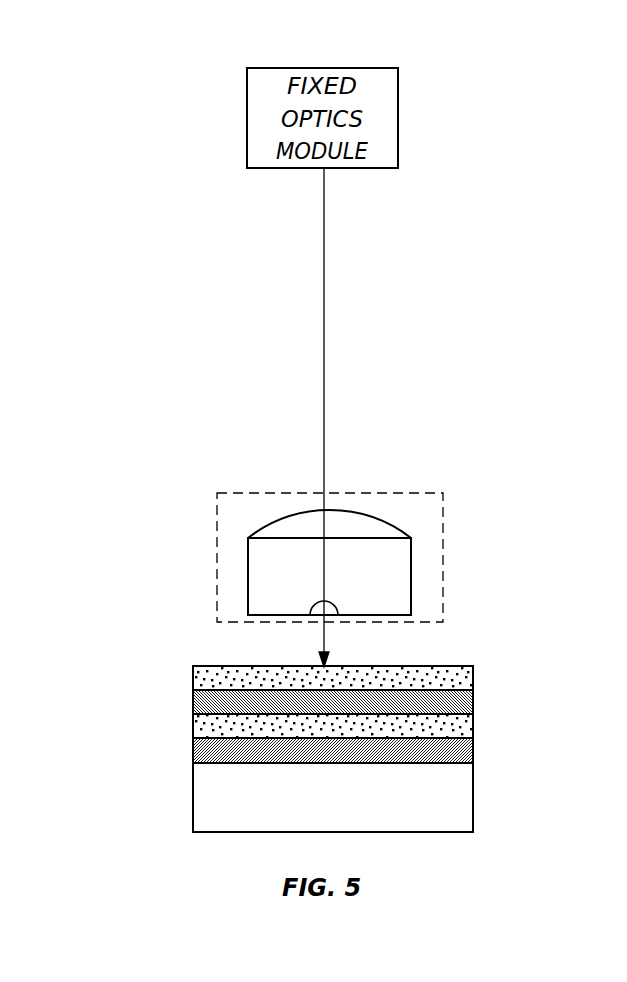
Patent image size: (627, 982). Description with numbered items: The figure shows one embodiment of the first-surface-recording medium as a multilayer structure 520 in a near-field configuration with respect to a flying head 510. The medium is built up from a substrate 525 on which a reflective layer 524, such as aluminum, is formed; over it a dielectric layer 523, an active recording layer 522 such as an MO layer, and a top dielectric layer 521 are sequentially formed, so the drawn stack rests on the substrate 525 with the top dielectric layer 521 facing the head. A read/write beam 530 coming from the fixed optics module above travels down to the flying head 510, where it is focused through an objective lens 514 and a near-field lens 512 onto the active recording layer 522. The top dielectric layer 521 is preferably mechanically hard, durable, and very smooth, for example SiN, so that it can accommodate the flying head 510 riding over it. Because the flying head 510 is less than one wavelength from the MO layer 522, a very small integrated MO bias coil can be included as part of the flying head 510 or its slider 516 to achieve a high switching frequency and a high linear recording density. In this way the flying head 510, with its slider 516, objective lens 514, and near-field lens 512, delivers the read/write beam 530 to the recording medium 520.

The flying head 510 is at (217, 525).
The near-field lens 512 is at (328, 602).
The objective lens 514 is at (373, 512).
The slider 516 is at (248, 597).
The multilayer structure 520 is at (344, 739).
The top dielectric layer 521 is at (193, 673).
The active recording layer 522 is at (193, 705).
The dielectric layer 523 is at (193, 735).
The reflective layer 524 is at (193, 752).
The substrate 525 is at (193, 802).
The read/write beam 530 is at (328, 652).